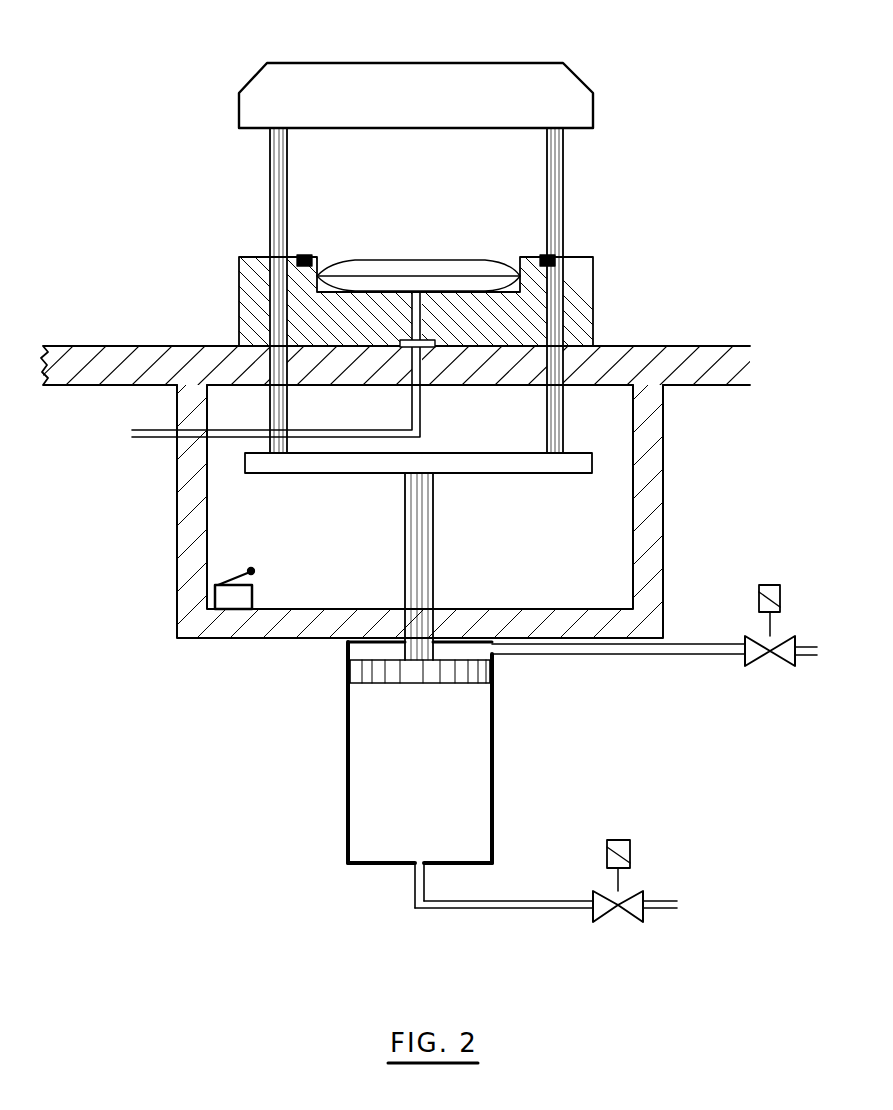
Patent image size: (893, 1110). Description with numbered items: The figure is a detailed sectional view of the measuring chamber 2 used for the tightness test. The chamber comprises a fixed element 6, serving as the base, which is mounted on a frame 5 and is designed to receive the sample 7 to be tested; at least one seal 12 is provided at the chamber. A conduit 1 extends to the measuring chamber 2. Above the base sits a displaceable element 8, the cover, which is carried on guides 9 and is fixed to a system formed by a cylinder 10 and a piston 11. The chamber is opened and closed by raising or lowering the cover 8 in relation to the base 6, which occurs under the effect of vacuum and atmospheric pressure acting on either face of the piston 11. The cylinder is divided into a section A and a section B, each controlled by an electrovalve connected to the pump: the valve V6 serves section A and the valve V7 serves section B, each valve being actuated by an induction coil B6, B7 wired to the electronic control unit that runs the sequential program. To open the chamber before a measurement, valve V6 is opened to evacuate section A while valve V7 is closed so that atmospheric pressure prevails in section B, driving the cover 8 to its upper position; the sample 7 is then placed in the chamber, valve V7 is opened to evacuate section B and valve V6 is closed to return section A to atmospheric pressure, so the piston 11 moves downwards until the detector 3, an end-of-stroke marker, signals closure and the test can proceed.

The conduit 1 is at (422, 420).
The measuring chamber 2 is at (578, 188).
The detector 3 is at (232, 615).
The frame 5 is at (652, 463).
The fixed element 6 is at (583, 298).
The sample 7 is at (414, 262).
The displaceable element 8 is at (533, 77).
The guides 9 is at (277, 184).
The cylinder 10 is at (345, 822).
The piston 11 is at (420, 556).
The seal 12 is at (303, 257).
The section A is at (360, 649).
The section B is at (455, 789).
The induction coil B6 is at (768, 595).
The valve V6 is at (654, 676).
The induction coil B7 is at (616, 849).
The valve V7 is at (546, 929).